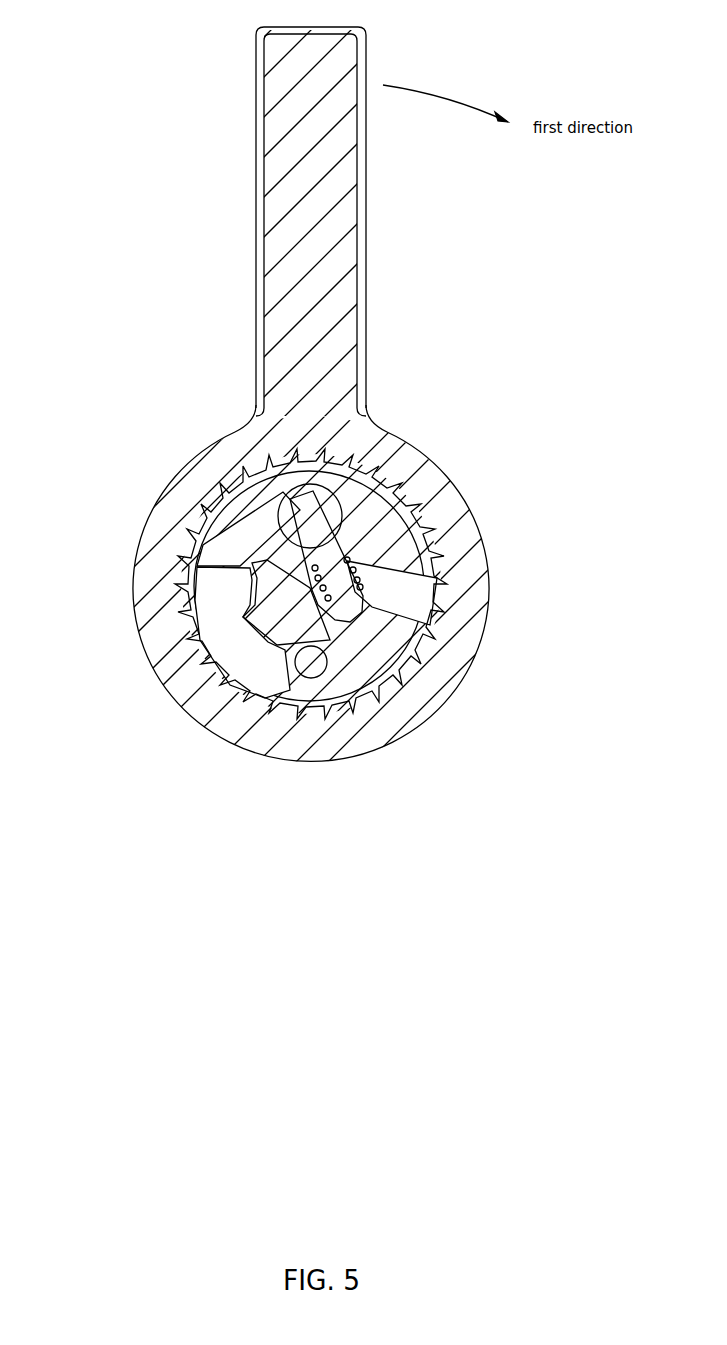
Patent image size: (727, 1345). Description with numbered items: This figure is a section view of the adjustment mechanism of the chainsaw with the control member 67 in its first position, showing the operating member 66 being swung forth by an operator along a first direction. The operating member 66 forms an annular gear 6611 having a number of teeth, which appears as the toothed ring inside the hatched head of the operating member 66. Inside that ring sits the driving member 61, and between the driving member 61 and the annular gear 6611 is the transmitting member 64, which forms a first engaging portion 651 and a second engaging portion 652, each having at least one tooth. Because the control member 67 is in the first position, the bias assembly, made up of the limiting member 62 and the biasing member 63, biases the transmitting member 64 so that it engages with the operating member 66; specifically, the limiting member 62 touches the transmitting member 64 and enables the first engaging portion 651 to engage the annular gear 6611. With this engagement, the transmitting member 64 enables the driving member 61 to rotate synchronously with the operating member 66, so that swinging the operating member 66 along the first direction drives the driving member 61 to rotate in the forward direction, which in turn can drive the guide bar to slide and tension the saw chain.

The driving member 61 is at (218, 544).
The limiting member 62 is at (372, 605).
The biasing member 63 is at (348, 562).
The transmitting member 64 is at (281, 651).
The first engaging portion 651 is at (445, 700).
The second engaging portion 652 is at (251, 596).
The operating member 66 is at (436, 454).
The annular gear 6611 is at (441, 541).
The control member 67 is at (286, 516).